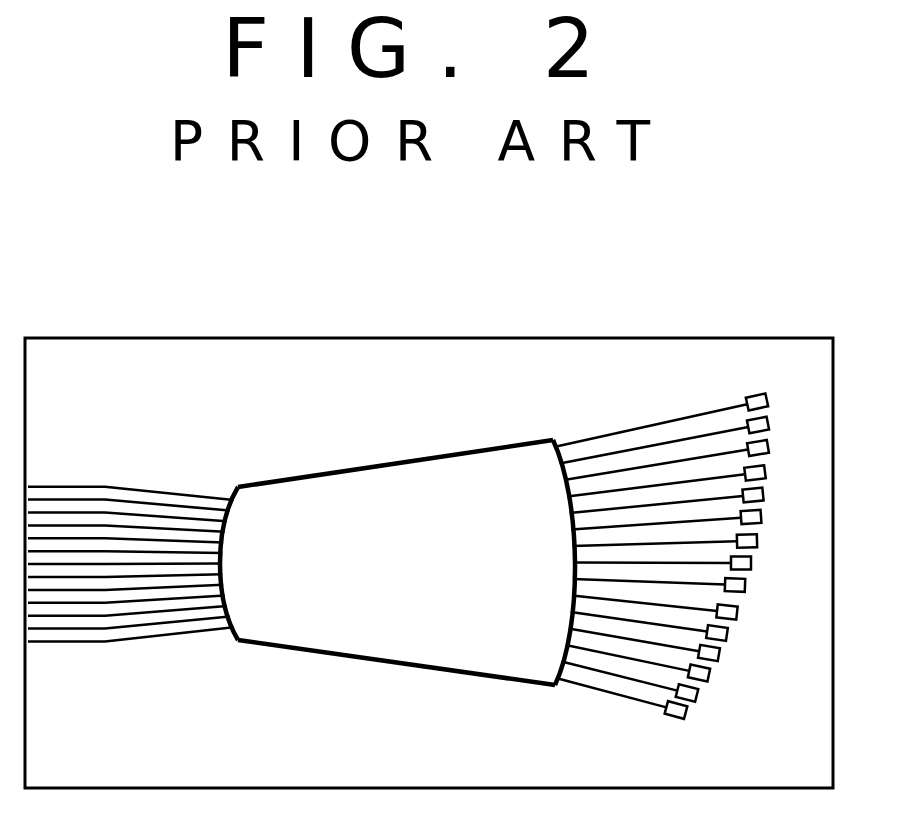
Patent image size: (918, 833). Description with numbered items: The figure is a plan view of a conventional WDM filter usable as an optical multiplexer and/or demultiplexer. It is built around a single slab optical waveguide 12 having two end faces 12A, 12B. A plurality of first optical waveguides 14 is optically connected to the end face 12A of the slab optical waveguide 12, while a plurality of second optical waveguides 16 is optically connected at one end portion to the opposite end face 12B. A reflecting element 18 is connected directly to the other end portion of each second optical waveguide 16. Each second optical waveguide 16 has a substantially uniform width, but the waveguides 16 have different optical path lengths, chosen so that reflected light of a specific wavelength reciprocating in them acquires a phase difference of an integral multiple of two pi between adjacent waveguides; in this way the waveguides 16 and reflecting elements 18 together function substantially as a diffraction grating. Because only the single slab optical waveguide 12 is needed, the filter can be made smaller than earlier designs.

The slab optical waveguide 12 is at (396, 464).
The end face 12A is at (236, 486).
The end face 12B is at (560, 440).
The first optical waveguides 14 is at (83, 659).
The second optical waveguides 16 is at (600, 706).
The reflecting element 18 is at (767, 397).